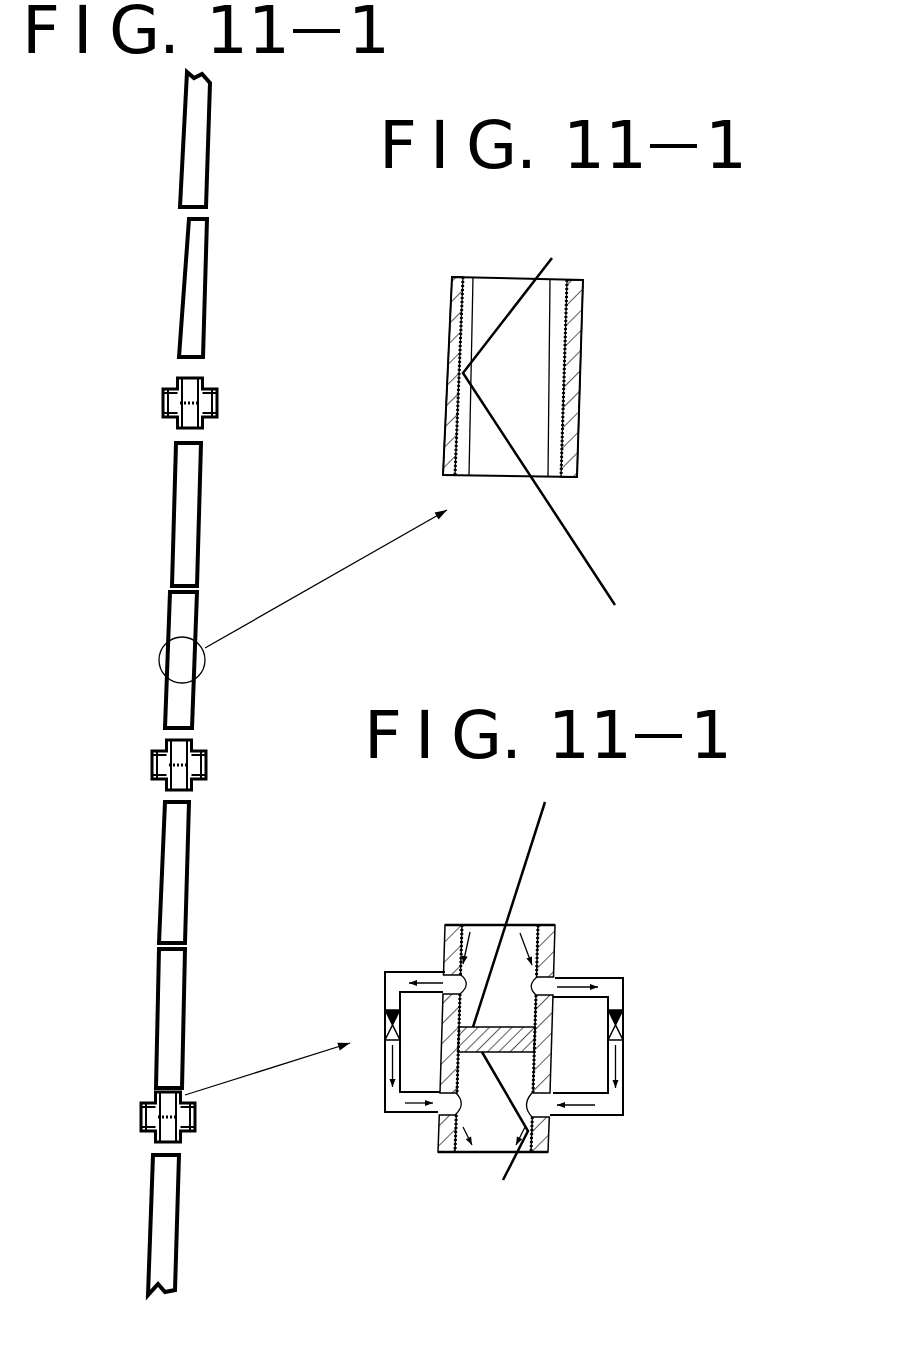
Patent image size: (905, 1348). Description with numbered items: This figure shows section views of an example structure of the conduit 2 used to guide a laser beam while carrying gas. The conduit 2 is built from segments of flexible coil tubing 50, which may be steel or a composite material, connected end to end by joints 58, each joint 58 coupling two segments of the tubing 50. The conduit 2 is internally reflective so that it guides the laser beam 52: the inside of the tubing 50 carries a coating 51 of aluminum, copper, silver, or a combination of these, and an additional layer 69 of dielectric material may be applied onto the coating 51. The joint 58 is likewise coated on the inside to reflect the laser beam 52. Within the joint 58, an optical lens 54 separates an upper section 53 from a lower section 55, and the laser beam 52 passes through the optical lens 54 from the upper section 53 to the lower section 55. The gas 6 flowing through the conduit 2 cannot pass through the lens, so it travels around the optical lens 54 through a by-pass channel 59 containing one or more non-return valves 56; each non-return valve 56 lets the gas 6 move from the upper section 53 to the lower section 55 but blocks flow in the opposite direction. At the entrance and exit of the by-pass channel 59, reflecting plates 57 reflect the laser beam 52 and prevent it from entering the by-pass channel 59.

In FIG. 11-1, the conduit 2 is at (228, 153).
In FIG. 11-1, the joint 58 is at (158, 398).
In FIG. 11-2, the flexible coil tubing 50 is at (582, 383).
In FIG. 11-2, the coating 51 is at (474, 302).
In FIG. 11-2, the laser beam 52 is at (558, 262).
In FIG. 11-3, the laser beam 52 is at (547, 858).
In FIG. 11-2, the additional layer of dielectric material 69 is at (545, 318).
In FIG. 11-3, the gas 6 is at (470, 925).
In FIG. 11-3, the upper section 53 is at (483, 973).
In FIG. 11-3, the optical lens 54 is at (533, 1035).
In FIG. 11-3, the lower section 55 is at (472, 1102).
In FIG. 11-3, the non-return valve 56 is at (624, 1027).
In FIG. 11-3, the reflecting plate 57 is at (530, 1102).
In FIG. 11-3, the by-pass channel 59 is at (624, 1082).